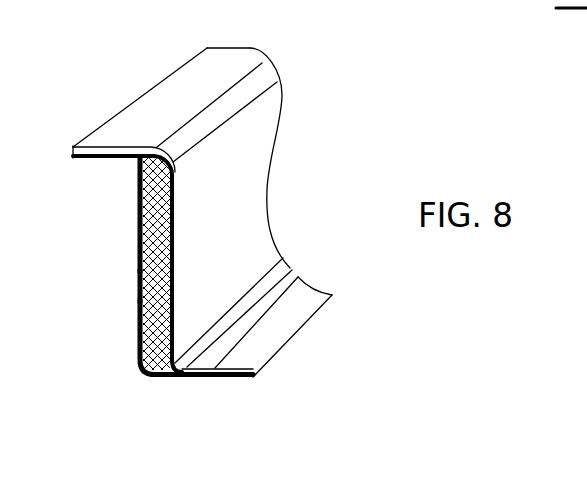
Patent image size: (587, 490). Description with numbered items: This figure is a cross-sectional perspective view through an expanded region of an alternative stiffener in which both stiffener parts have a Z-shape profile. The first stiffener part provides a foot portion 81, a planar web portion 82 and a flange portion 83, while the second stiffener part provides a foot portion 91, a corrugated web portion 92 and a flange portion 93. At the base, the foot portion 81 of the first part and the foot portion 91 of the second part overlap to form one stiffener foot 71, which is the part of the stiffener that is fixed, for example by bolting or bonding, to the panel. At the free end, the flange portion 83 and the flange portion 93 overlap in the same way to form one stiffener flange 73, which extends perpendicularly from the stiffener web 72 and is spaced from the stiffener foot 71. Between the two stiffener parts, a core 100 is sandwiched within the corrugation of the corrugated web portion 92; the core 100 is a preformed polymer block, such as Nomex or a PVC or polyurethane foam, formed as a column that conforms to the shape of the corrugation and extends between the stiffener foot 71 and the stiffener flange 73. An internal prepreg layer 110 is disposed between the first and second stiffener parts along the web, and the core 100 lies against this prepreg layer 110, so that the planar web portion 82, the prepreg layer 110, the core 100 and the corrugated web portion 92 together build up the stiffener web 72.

The stiffener foot 71 is at (288, 278).
The stiffener web 72 is at (140, 253).
The stiffener flange 73 is at (217, 72).
The foot portion 81 is at (183, 378).
The planar web portion 82 is at (138, 320).
The flange portion 83 is at (110, 158).
The foot portion 91 is at (280, 323).
The corrugated web portion 92 is at (270, 190).
The flange portion 93 is at (160, 110).
The core 100 is at (165, 286).
The internal prepreg layer 110 is at (140, 283).